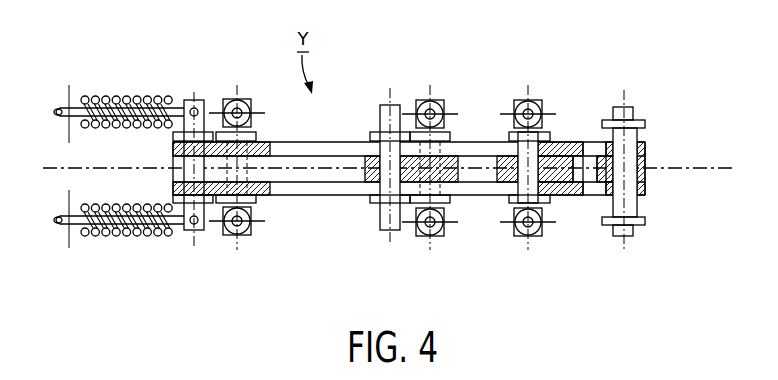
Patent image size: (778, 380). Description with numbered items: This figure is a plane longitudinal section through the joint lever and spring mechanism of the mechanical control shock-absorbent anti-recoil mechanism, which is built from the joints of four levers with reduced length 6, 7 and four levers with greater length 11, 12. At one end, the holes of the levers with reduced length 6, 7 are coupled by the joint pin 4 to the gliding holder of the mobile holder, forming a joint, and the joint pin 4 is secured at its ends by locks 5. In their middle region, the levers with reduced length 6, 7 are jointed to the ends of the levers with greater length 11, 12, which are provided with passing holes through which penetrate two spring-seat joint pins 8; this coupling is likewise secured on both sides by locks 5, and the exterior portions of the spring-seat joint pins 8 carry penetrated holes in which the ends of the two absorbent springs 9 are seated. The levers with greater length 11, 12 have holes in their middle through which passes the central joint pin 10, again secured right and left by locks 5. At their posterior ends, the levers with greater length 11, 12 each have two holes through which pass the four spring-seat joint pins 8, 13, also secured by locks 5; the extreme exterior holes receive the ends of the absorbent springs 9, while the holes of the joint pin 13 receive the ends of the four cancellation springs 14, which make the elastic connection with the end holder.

The joint pin 4 is at (630, 138).
The locks 5 is at (640, 223).
The lever with reduced length 6 is at (573, 184).
The lever with reduced length 7 is at (592, 152).
The spring-seat joint pin 8 is at (247, 208).
The absorbent spring 9 is at (238, 95).
The central joint pin 10 is at (382, 233).
The lever with greater length 11 is at (307, 160).
The lever with greater length 12 is at (333, 196).
The spring-seat joint pin 13 is at (190, 163).
The cancellation spring 14 is at (118, 98).